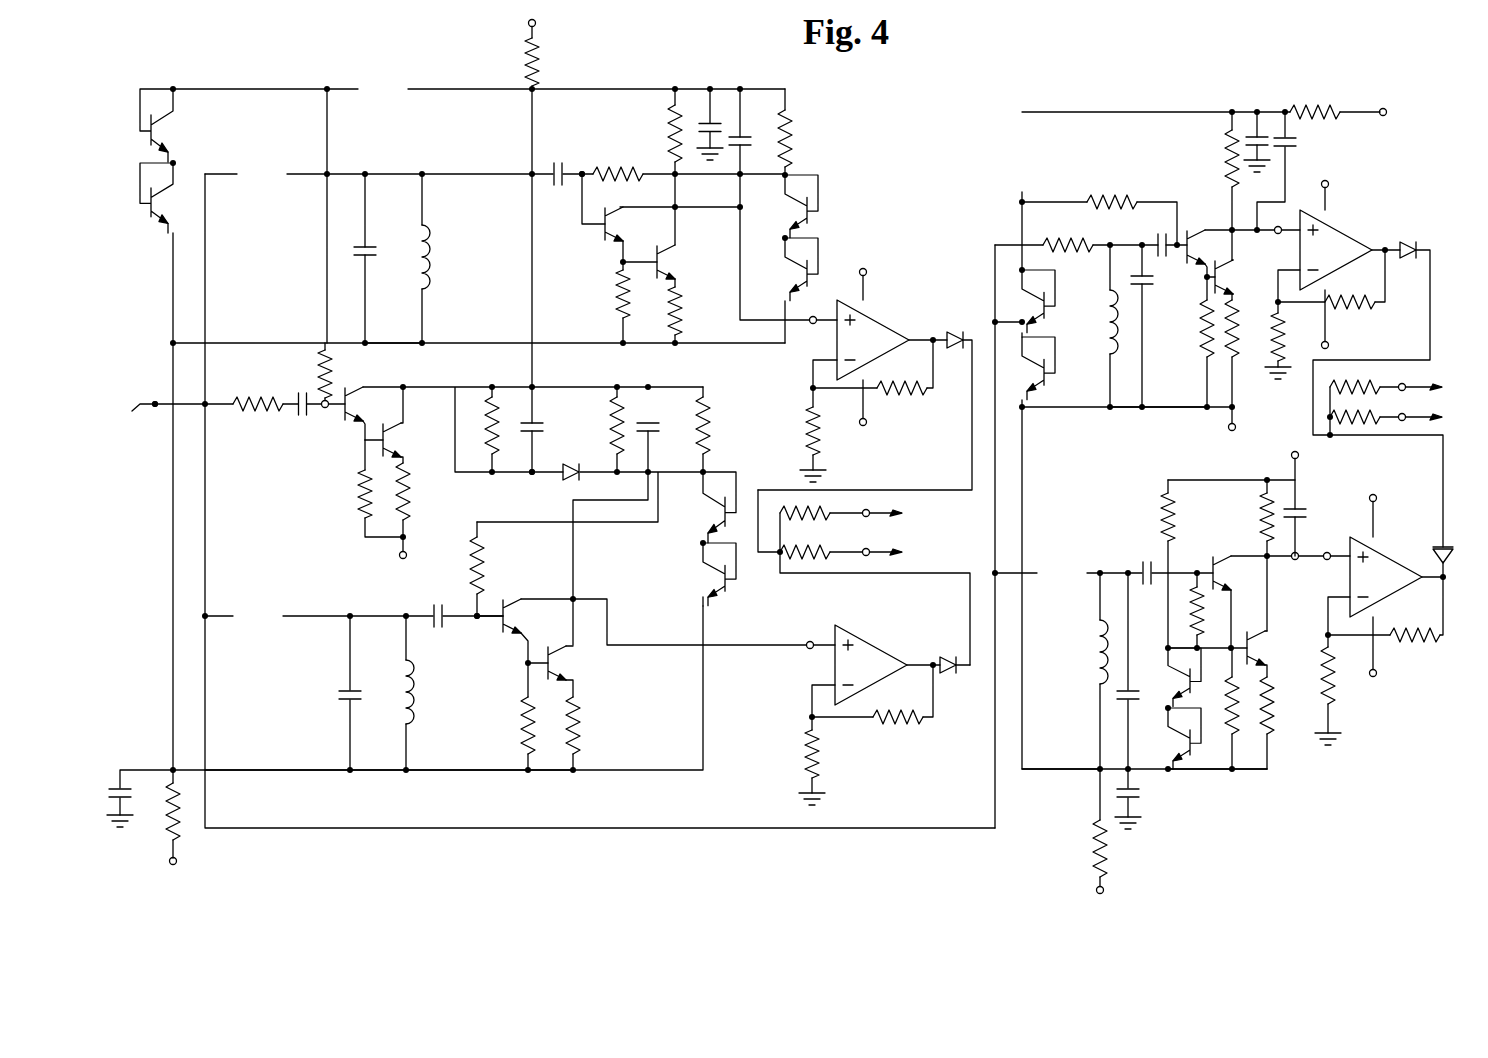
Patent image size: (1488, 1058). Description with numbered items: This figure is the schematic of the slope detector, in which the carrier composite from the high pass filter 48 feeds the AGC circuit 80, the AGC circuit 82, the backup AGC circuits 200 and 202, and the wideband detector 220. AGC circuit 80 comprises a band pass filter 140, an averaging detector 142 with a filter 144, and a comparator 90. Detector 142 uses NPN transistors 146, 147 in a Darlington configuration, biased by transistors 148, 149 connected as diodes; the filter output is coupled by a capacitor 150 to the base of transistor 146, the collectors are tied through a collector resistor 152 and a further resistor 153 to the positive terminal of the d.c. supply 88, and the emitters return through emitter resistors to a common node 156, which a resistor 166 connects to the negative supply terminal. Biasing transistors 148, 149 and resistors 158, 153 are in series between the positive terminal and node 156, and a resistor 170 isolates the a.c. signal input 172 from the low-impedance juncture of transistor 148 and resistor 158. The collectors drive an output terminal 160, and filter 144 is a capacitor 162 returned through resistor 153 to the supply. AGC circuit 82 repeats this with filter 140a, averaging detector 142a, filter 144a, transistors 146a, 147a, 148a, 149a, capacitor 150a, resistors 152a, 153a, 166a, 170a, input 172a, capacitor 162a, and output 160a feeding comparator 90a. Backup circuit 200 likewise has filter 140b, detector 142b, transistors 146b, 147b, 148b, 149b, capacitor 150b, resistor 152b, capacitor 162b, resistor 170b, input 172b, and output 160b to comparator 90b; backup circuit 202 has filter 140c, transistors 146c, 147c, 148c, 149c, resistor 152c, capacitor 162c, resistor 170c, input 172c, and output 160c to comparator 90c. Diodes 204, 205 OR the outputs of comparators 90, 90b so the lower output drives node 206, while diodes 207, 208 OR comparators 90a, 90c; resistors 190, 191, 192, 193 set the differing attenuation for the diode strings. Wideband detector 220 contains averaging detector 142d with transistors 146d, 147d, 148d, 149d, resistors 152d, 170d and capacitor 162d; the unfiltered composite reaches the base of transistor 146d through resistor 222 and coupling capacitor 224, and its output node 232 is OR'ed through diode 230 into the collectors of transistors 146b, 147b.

The high pass filter 48 is at (120, 405).
The AGC circuit 80 is at (322, 146).
The AGC circuit 82 is at (1100, 424).
The d.c. voltage supply 88 is at (1388, 690).
The comparator 90 is at (868, 318).
The comparator 90a is at (1332, 283).
The comparator 90b is at (848, 626).
The comparator 90c is at (1380, 545).
The channel band pass filter 140 is at (420, 348).
The channel band pass filter 140a is at (1130, 430).
The channel band pass filter 140b is at (425, 775).
The channel band pass filter 140c is at (1085, 778).
The averaging detector 142 is at (600, 260).
The averaging detector 142a is at (1242, 352).
The averaging detector 142b is at (512, 700).
The averaging detector 142d is at (318, 473).
The filter 144 is at (752, 126).
The filter 144a is at (1296, 128).
The NPN transistor 146 is at (598, 228).
The NPN transistor 146a is at (1198, 262).
The NPN transistor 146b is at (505, 636).
The NPN transistor 146c is at (1240, 585).
The NPN transistor 146d is at (350, 424).
The NPN transistor 147 is at (665, 262).
The NPN transistor 147a is at (1212, 285).
The NPN transistor 147b is at (566, 670).
The NPN transistor 147c is at (1255, 642).
The NPN transistor 147d is at (392, 434).
The biasing transistor 148 is at (818, 195).
The biasing transistor 148a is at (1045, 300).
The biasing transistor 148b is at (708, 498).
The biasing transistor 148c is at (1178, 680).
The biasing transistor 148d is at (155, 135).
The biasing transistor 149 is at (818, 262).
The biasing transistor 149a is at (1045, 352).
The biasing transistor 149b is at (700, 560).
The biasing transistor 149c is at (1180, 742).
The biasing transistor 149d is at (157, 215).
The capacitor 150 is at (552, 180).
The capacitor 150a is at (1158, 240).
The capacitor 150b is at (460, 636).
The collector resistor 152 is at (670, 120).
The collector resistor 152a is at (1227, 160).
The collector resistor 152b is at (610, 438).
The collector resistor 152c is at (1262, 520).
The collector resistor 152d is at (490, 408).
The resistor 153 is at (539, 66).
The resistor 153a is at (1330, 110).
The common node 156 is at (672, 335).
The resistor 158 is at (790, 110).
The output terminal 160 is at (812, 317).
The output terminal 160a is at (1276, 236).
The output terminal 160b is at (806, 650).
The output terminal 160c is at (1327, 552).
The capacitor 162 is at (712, 120).
The capacitor 162a is at (1293, 150).
The capacitor 162b is at (655, 425).
The capacitor 162c is at (1298, 510).
The capacitor 162d is at (540, 425).
The resistor 166 is at (169, 830).
The resistor 166a is at (1095, 849).
The resistor 170 is at (630, 172).
The resistor 170a is at (1115, 198).
The resistor 170b is at (479, 580).
The resistor 170c is at (1163, 520).
The resistor 170d is at (330, 385).
The a.c. signal input 172 is at (560, 168).
The a.c. signal input 172a is at (1170, 240).
The a.c. signal input 172b is at (450, 600).
The a.c. signal input 172c is at (1195, 553).
The resistor 190 is at (800, 510).
The resistor 191 is at (795, 565).
The resistor 192 is at (1360, 390).
The resistor 193 is at (1370, 418).
The backup AGC circuit 200 is at (340, 780).
The backup AGC circuit 202 is at (1258, 780).
The diode 204 is at (955, 330).
The diode 205 is at (950, 660).
The node 206 is at (805, 542).
The diode 207 is at (1408, 240).
The diode 208 is at (1433, 550).
The wideband detector 220 is at (303, 522).
The resistor 222 is at (262, 386).
The coupling capacitor 224 is at (300, 412).
The diode 230 is at (567, 478).
The output node 232 is at (530, 475).